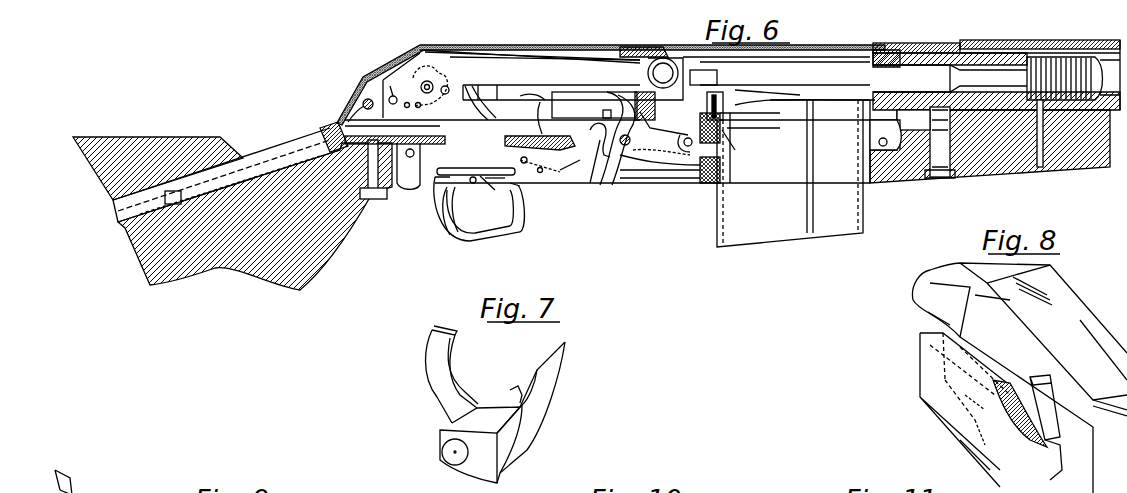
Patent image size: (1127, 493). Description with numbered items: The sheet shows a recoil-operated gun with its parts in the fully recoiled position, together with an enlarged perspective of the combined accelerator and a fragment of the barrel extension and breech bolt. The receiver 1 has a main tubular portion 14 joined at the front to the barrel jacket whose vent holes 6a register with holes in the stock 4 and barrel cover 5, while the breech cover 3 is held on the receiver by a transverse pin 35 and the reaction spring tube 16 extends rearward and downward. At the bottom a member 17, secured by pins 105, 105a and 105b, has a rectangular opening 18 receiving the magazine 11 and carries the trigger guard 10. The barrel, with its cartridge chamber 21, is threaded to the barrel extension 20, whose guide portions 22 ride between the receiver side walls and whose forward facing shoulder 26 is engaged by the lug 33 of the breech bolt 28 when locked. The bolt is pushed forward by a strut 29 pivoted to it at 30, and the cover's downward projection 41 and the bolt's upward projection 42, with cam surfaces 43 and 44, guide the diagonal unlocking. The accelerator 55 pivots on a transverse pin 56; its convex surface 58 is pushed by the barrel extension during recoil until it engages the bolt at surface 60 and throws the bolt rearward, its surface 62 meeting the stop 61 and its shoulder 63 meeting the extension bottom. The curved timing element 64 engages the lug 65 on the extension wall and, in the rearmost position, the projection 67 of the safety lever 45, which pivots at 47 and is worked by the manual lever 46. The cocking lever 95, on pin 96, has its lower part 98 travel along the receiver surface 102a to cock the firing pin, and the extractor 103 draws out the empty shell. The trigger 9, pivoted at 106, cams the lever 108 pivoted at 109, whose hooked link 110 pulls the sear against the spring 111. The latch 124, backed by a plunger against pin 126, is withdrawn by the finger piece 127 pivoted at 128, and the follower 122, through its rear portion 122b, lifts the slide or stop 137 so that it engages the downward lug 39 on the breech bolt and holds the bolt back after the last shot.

In FIG. 6, the receiver 1 is at (892, 43).
In FIG. 6, the breech cover 3 is at (528, 46).
In FIG. 6, the stock 4 is at (100, 192).
In FIG. 6, the barrel cover 5 is at (1103, 40).
In FIG. 6, the vent holes 6a is at (1045, 45).
In FIG. 6, the trigger 9 is at (455, 205).
In FIG. 6, the trigger guard 10 is at (490, 238).
In FIG. 6, the magazine 11 is at (863, 227).
In FIG. 6, the tubular portion 14 is at (676, 56).
In FIG. 6, the reaction spring tube 16 is at (273, 146).
In FIG. 6, the member 17 is at (872, 184).
In FIG. 6, the rectangular opening 18 is at (860, 122).
In FIG. 6, the barrel extension 20 is at (878, 48).
In FIG. 6, the cartridge chamber 21 is at (925, 72).
In FIG. 8, the guide portions 22 is at (925, 348).
In FIG. 6, the shoulder 26 is at (657, 106).
In FIG. 6, the breech bolt 28 is at (551, 84).
In FIG. 8, the breech bolt 28 is at (1088, 333).
In FIG. 6, the strut 29 is at (300, 135).
In FIG. 6, the pivot connection 30 is at (397, 88).
In FIG. 6, the lug 33 is at (508, 86).
In FIG. 6, the transverse pin 35 is at (362, 100).
In FIG. 6, the locking block 39 is at (708, 96).
In FIG. 6, the downward projection 41 is at (632, 45).
In FIG. 6, the upward projection 42 is at (442, 53).
In FIG. 8, the upward projection 42 is at (1035, 273).
In FIG. 6, the inclined cam surface 43 is at (620, 55).
In FIG. 6, the inclined cam surface 44 is at (445, 50).
In FIG. 8, the inclined cam surface 44 is at (984, 288).
In FIG. 6, the safety lever 45 is at (476, 162).
In FIG. 6, the manually operable lever 46 is at (438, 80).
In FIG. 6, the pivot 47 is at (460, 139).
In FIG. 6, the accelerator 55 is at (642, 165).
In FIG. 7, the accelerator 55 is at (562, 405).
In FIG. 8, the accelerator 55 is at (958, 440).
In FIG. 6, the transverse pin 56 is at (631, 141).
In FIG. 8, the transverse pin 56 is at (1022, 415).
In FIG. 7, the convex forward facing surface 58 is at (560, 374).
In FIG. 8, the convex forward facing surface 58 is at (955, 423).
In FIG. 6, the forward facing surface 60 is at (483, 83).
In FIG. 8, the forward facing surface 60 is at (928, 316).
In FIG. 6, the stop 61 is at (603, 112).
In FIG. 8, the stop 61 is at (969, 395).
In FIG. 7, the surface 62 is at (513, 387).
In FIG. 8, the surface 62 is at (983, 441).
In FIG. 7, the shoulder 63 is at (527, 450).
In FIG. 6, the timing element 64 is at (628, 160).
In FIG. 7, the timing element 64 is at (422, 350).
In FIG. 8, the timing element 64 is at (1055, 400).
In FIG. 8, the lug 65 is at (1075, 455).
In FIG. 6, the forward extending projection 67 is at (575, 180).
In FIG. 6, the cocking lever 95 is at (477, 100).
In FIG. 6, the transverse pin 96 is at (452, 85).
In FIG. 6, the lower part of cocking lever 98 is at (526, 116).
In FIG. 6, the surface 102a is at (536, 92).
In FIG. 6, the extractor 103 is at (718, 80).
In FIG. 6, the pin 105 is at (887, 147).
In FIG. 6, the pin 105a is at (690, 150).
In FIG. 6, the pin 105b is at (412, 167).
In FIG. 6, the trigger pivot 106 is at (473, 184).
In FIG. 6, the lever 108 is at (493, 190).
In FIG. 6, the pivot 109 is at (528, 170).
In FIG. 6, the hooked link 110 is at (591, 139).
In FIG. 6, the spring 111 is at (596, 183).
In FIG. 6, the magazine follower 122 is at (738, 112).
In FIG. 6, the rear portion of follower 122b is at (735, 135).
In FIG. 6, the latch 124 is at (662, 178).
In FIG. 6, the pin 126 is at (661, 152).
In FIG. 6, the finger piece 127 is at (497, 205).
In FIG. 6, the pivot 128 is at (540, 175).
In FIG. 6, the slide or stop 137 is at (735, 100).